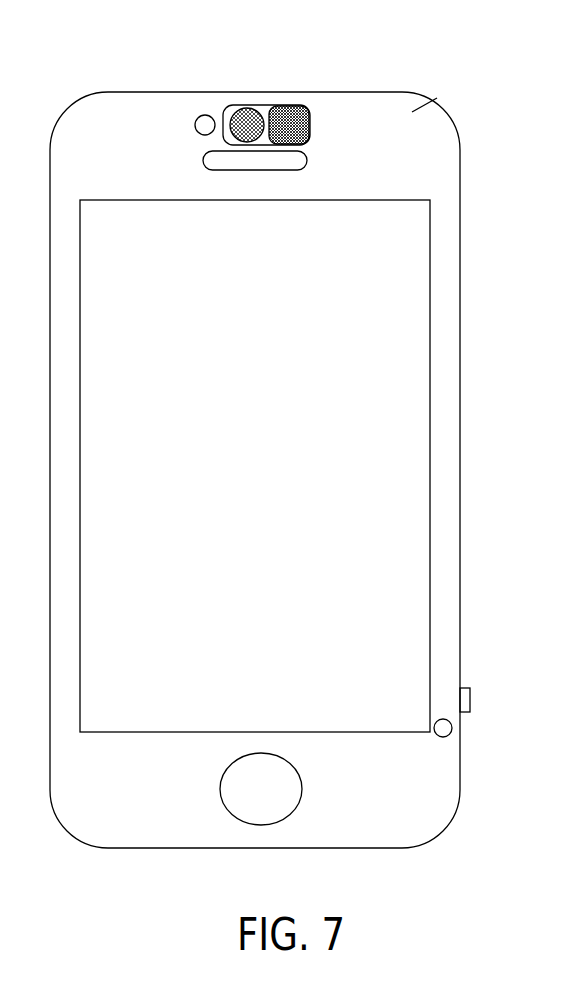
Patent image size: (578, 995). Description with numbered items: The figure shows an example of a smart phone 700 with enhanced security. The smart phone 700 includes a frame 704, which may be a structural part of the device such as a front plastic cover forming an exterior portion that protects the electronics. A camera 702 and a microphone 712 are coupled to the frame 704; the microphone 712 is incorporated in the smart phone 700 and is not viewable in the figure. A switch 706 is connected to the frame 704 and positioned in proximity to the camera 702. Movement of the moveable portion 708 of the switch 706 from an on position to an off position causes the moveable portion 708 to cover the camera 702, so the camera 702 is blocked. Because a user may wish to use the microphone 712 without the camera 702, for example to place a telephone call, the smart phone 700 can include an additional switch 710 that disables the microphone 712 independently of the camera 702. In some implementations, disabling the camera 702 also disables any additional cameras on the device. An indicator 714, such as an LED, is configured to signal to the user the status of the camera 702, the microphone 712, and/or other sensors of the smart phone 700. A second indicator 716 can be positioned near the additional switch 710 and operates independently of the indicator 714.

The smart phone 700 is at (462, 182).
The camera 702 is at (262, 108).
The frame 704 is at (434, 100).
The switch 706 is at (312, 120).
The moveable portion 708 is at (297, 130).
The additional switch 710 is at (470, 698).
The microphone 712 is at (387, 867).
The indicator 714 is at (200, 118).
The second indicator 716 is at (452, 734).